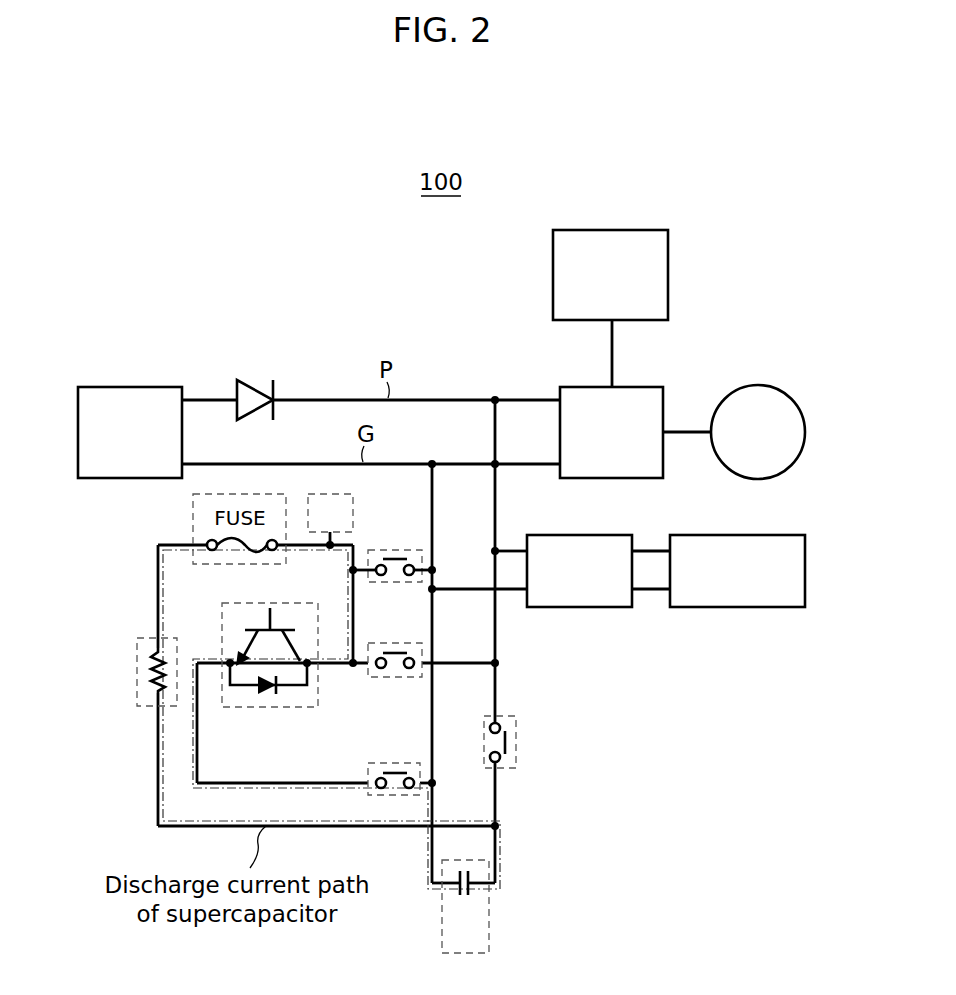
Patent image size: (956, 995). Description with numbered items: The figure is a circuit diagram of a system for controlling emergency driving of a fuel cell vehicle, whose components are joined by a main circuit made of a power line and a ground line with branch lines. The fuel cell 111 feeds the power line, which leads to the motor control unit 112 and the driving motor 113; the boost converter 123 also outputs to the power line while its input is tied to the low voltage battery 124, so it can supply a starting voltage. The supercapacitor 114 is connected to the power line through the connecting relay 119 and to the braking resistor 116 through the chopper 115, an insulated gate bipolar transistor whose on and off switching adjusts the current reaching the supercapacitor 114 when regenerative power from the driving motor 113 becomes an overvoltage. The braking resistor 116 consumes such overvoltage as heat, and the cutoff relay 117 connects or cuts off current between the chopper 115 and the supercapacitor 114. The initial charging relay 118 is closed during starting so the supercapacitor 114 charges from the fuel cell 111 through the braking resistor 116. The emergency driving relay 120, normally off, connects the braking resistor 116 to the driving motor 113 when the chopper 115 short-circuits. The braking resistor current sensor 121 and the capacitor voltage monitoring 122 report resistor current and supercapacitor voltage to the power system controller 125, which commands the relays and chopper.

The fuel cell 111 is at (152, 386).
The motor control unit 112 is at (650, 386).
The driving motor 113 is at (756, 386).
The supercapacitor 114 is at (458, 897).
The chopper 115 is at (268, 707).
The braking resistor 116 is at (137, 671).
The cutoff relay 117 is at (396, 763).
The initial charging relay 118 is at (384, 677).
The connecting relay 119 is at (516, 748).
The emergency driving relay 120 is at (398, 582).
The braking resistor current sensor 121 is at (353, 512).
The capacitor voltage monitoring 122 is at (489, 930).
The boost converter 123 is at (600, 534).
The low voltage battery 124 is at (774, 534).
The power system controller 125 is at (612, 229).